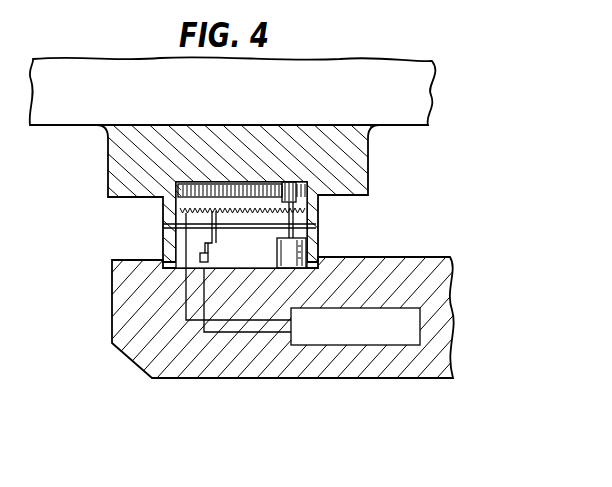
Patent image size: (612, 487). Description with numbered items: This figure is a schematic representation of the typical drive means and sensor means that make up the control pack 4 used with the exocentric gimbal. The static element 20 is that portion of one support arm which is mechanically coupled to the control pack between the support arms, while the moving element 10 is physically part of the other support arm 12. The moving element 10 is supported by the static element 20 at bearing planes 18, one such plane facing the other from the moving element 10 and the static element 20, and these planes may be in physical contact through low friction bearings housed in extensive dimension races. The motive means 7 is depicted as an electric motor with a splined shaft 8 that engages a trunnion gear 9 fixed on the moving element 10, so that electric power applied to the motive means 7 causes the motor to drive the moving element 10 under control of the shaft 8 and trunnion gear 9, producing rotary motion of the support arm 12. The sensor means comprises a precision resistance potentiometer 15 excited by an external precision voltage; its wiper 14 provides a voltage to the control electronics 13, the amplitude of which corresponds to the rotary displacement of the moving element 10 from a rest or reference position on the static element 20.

The support arm 12 is at (382, 62).
The moving element 10 is at (360, 155).
The static element 20 is at (402, 258).
The control electronics 13 is at (325, 346).
The control pack 4 is at (157, 225).
The trunnion gear 9 is at (200, 190).
The splined shaft 8 is at (296, 185).
The bearing planes 18 is at (305, 230).
The precision resistance potentiometer 15 is at (253, 217).
The wiper 14 is at (196, 258).
The motive means 7 is at (288, 255).